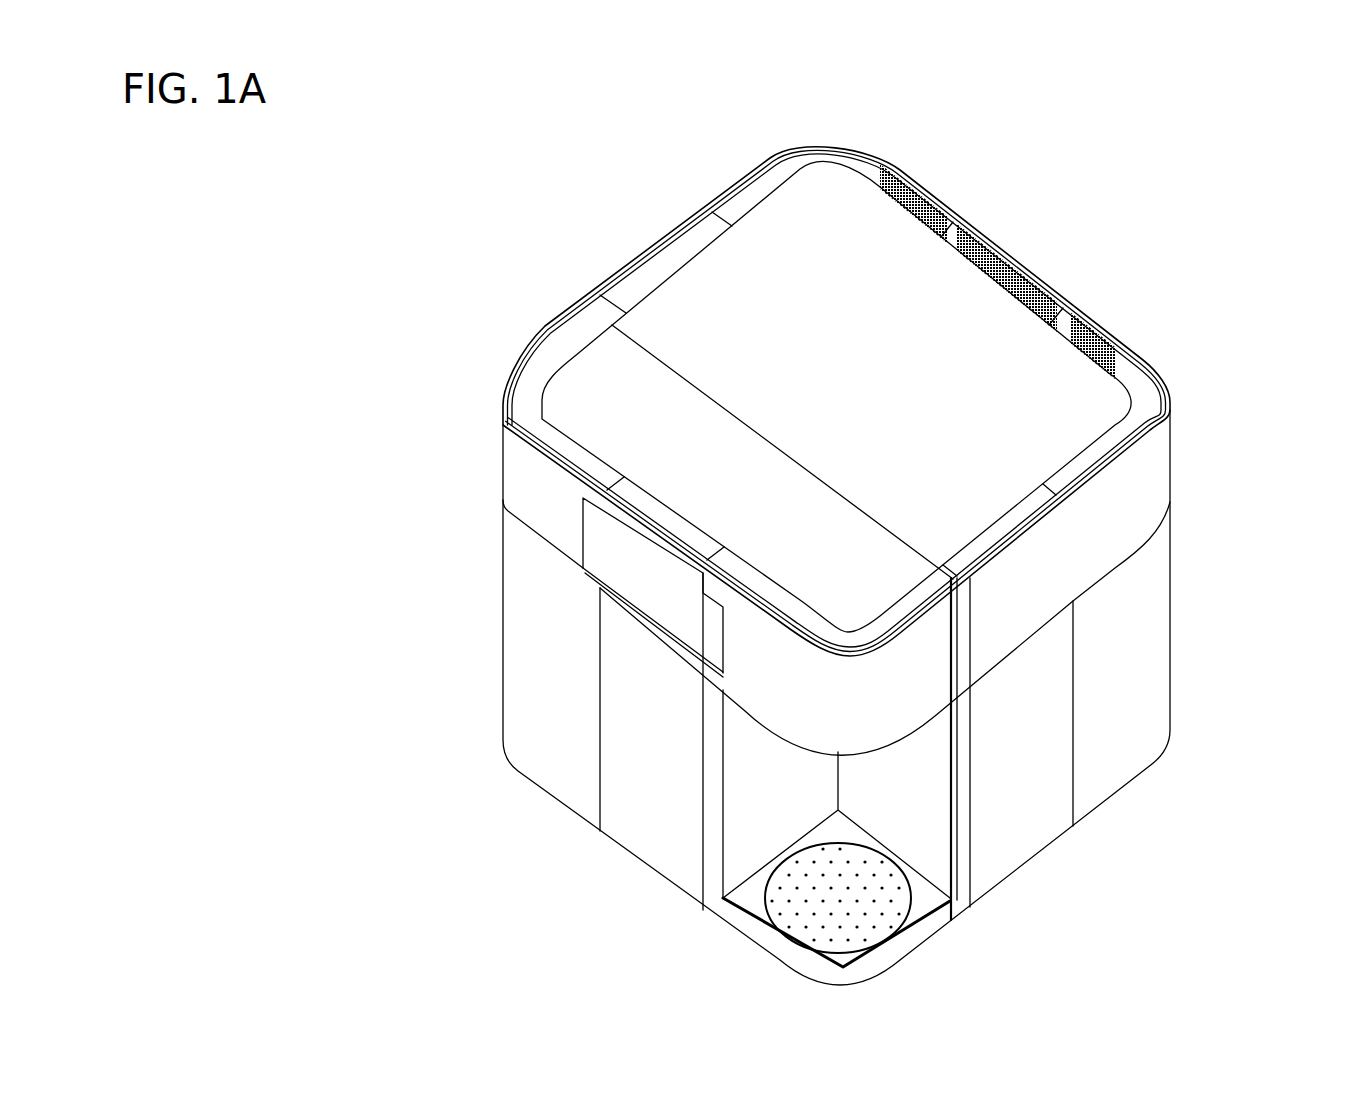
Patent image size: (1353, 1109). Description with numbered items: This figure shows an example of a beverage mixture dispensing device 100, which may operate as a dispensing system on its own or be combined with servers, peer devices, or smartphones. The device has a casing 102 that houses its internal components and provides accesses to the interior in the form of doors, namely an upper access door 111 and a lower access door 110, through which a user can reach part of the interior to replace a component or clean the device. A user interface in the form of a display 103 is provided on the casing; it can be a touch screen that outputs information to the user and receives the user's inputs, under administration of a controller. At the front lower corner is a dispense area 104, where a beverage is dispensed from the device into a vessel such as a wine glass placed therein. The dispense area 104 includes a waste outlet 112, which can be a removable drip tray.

The beverage mixture dispensing device 100 is at (1166, 186).
The casing 102 is at (1170, 468).
The display 103 is at (607, 555).
The dispense area 104 is at (934, 828).
The lower access door 110 is at (550, 725).
The upper access door 111 is at (513, 465).
The waste outlet 112 is at (807, 942).